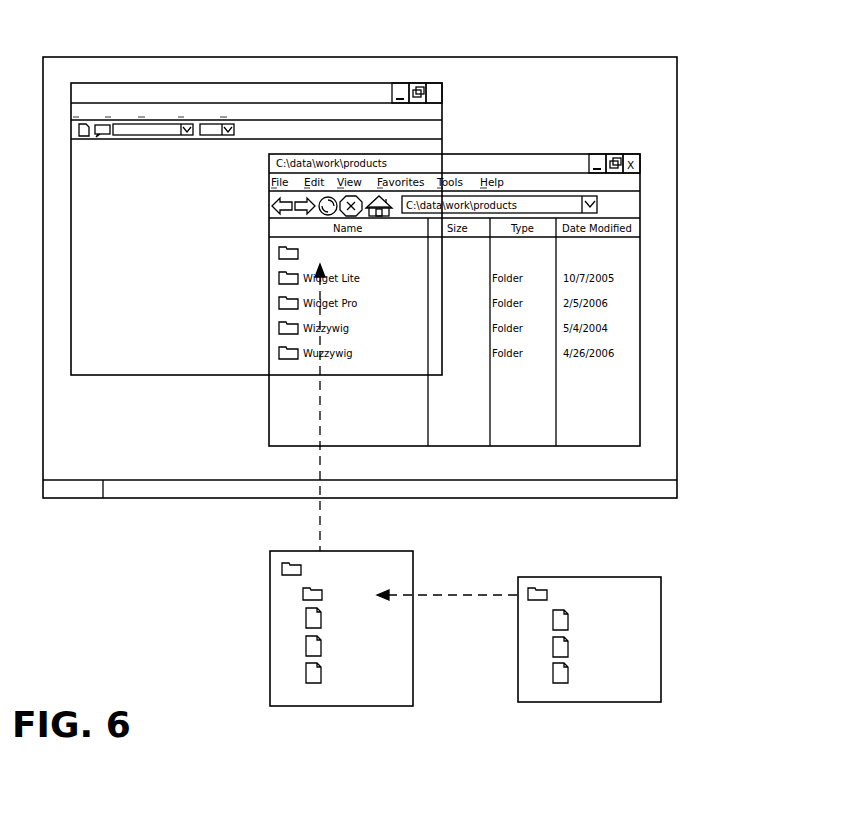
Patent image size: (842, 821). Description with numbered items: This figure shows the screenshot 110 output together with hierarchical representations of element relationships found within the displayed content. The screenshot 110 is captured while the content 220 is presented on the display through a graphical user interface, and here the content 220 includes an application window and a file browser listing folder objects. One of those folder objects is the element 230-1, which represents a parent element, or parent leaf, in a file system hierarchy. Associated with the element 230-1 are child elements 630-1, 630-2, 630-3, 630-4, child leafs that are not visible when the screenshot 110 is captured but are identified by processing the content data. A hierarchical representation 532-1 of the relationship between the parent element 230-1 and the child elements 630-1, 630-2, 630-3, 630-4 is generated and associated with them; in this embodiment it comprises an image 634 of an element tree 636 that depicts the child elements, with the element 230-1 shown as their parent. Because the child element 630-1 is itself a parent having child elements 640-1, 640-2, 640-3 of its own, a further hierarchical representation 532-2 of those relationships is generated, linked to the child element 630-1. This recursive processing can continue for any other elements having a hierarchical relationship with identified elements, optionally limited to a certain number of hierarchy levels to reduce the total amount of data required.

The screenshot 110 is at (677, 217).
The content 220 is at (633, 106).
The element 230-1 is at (277, 253).
The hierarchical representation 532-1 is at (430, 565).
The hierarchical representation 532-2 is at (680, 593).
The child element 630-1 is at (301, 593).
The child element 630-2 is at (304, 618).
The child element 630-3 is at (304, 645).
The child element 630-4 is at (304, 673).
The image 634 is at (280, 551).
The element tree 636 is at (359, 562).
The child element 640-1 is at (610, 621).
The child element 640-2 is at (614, 648).
The child element 640-3 is at (618, 674).